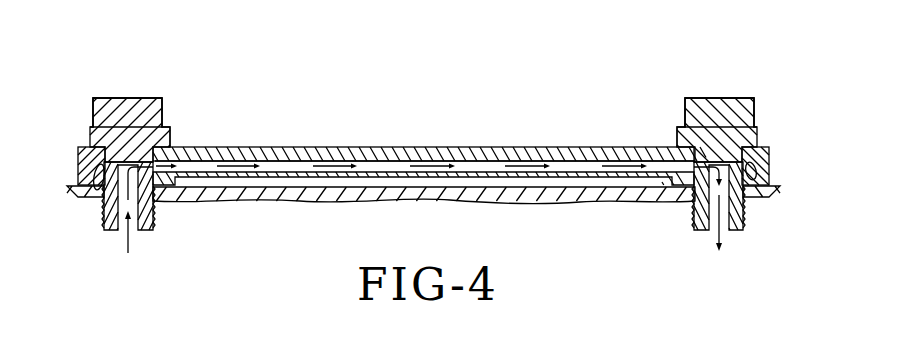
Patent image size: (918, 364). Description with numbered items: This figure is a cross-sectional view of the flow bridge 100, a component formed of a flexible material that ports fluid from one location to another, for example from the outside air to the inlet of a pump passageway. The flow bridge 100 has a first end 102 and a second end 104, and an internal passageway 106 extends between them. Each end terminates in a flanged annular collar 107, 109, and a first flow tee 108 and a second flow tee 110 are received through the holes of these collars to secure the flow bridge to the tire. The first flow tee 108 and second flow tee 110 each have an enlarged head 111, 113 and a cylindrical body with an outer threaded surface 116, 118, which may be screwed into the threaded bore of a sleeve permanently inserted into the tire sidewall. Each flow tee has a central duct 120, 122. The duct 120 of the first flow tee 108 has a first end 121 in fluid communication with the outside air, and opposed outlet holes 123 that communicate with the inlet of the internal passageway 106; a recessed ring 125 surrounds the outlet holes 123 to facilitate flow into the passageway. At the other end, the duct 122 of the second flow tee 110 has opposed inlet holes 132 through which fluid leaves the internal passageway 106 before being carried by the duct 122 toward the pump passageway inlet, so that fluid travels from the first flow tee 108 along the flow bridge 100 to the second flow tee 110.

The flow bridge 100 is at (415, 127).
The first end 102 is at (72, 131).
The second end 104 is at (775, 132).
The internal passageway 106 is at (402, 165).
The flanged annular collar 107 is at (85, 158).
The first flow tee 108 is at (117, 92).
The flanged annular collar 109 is at (758, 168).
The second flow tee 110 is at (730, 92).
The enlarged head 111 is at (133, 110).
The enlarged head 113 is at (716, 110).
The outer threaded surface 116 is at (153, 218).
The outer threaded surface 118 is at (694, 218).
The central duct 120 is at (123, 230).
The first end 121 is at (146, 232).
The central duct 122 is at (724, 232).
The outlet holes 123 is at (137, 163).
The recessed ring 125 is at (103, 165).
The inlet holes 132 is at (711, 160).